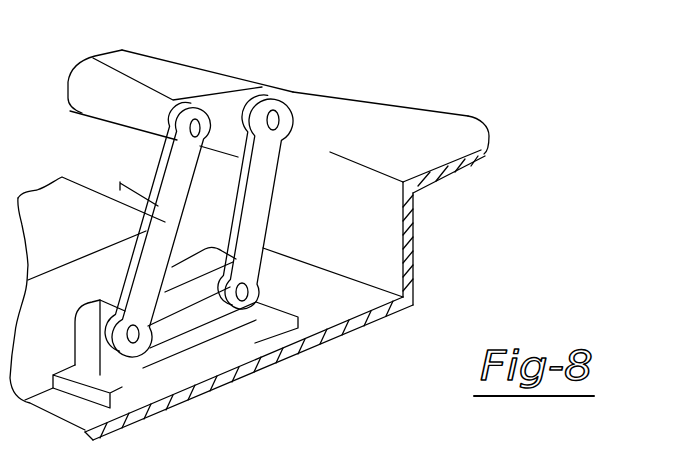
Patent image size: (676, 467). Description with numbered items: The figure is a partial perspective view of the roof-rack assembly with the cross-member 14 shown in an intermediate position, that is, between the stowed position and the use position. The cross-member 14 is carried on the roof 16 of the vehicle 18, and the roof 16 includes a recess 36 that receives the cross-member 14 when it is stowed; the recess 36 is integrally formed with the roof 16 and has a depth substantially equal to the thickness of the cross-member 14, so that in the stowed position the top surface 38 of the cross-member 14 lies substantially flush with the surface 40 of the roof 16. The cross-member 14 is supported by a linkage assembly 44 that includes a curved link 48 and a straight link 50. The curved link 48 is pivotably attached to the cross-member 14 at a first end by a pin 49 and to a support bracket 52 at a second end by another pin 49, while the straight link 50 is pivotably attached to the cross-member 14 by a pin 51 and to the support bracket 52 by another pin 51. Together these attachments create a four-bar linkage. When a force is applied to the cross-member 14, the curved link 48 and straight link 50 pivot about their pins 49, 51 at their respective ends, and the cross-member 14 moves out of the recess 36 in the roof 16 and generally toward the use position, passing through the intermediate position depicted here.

The cross-member 14 is at (230, 87).
The top surface 38 is at (155, 78).
The roof 16 is at (445, 123).
The surface 40 is at (458, 133).
The vehicle 18 is at (366, 108).
The recess 36 is at (358, 308).
The linkage assembly 44 is at (310, 302).
The support bracket 52 is at (193, 327).
The straight link 50 is at (165, 213).
The curved link 48 is at (267, 214).
The pin 51 is at (200, 133).
The pin 49 is at (279, 120).